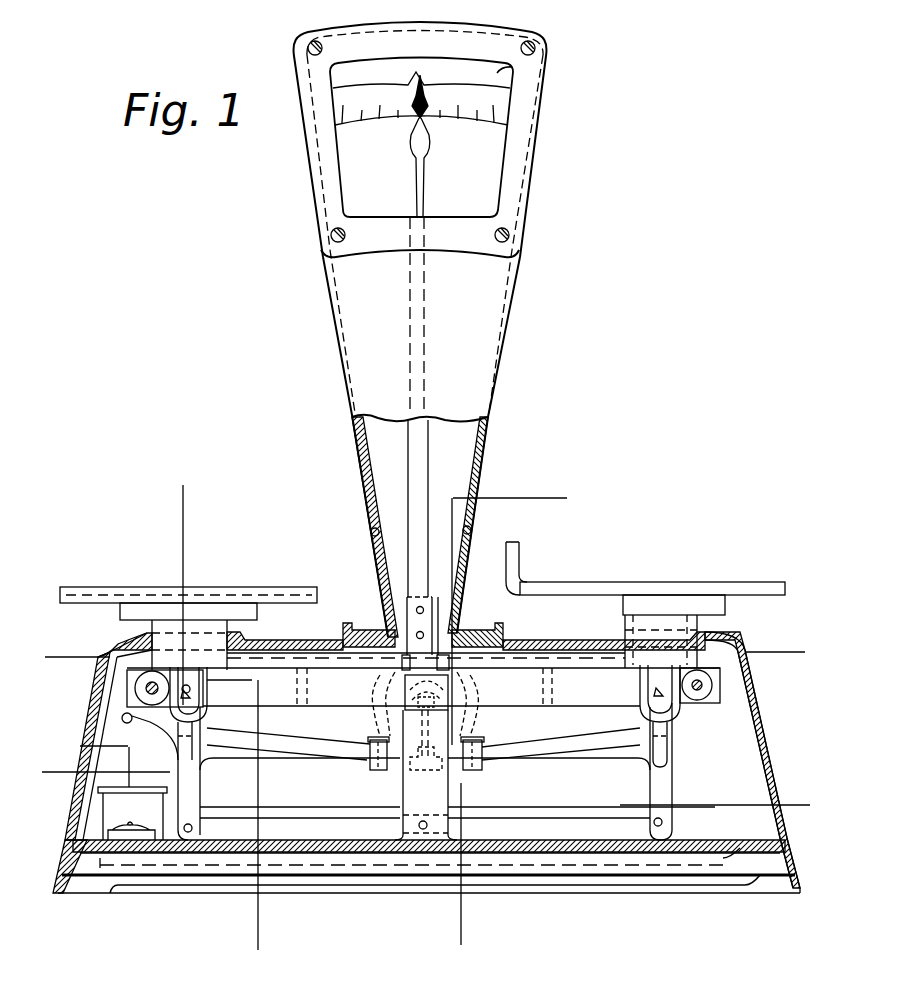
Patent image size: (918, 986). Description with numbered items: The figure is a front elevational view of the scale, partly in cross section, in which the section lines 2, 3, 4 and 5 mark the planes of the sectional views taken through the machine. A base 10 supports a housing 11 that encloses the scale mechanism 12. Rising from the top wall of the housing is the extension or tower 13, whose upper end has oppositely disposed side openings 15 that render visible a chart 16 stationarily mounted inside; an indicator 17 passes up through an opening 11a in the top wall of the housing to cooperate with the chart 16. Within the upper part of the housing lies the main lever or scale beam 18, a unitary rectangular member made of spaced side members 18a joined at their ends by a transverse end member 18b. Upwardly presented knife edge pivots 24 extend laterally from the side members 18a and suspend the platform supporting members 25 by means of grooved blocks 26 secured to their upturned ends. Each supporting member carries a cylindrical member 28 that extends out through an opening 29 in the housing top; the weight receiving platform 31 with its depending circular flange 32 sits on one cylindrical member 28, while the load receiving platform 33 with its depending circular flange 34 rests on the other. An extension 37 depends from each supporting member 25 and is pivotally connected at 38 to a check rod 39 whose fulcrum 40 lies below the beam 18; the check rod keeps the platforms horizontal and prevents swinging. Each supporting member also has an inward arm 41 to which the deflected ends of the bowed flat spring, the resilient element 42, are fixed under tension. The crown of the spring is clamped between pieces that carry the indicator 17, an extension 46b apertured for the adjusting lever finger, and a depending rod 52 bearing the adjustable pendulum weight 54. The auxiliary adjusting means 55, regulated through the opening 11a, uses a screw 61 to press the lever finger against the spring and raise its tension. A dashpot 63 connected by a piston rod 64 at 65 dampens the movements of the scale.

The section line 2- 2 is at (425, 657).
The section line 3- 3 is at (426, 787).
The section line 4- 4 is at (618, 505).
The section line 5- 5 is at (208, 462).
The base 10 is at (632, 852).
The housing 11 is at (768, 740).
The opening 11a is at (397, 633).
The scale mechanism 12 is at (545, 657).
The extension or tower 13 is at (487, 317).
The side openings 15 is at (478, 170).
The chart 16 is at (497, 73).
The indicator 17 is at (413, 462).
The main lever or scale beam 18 is at (423, 687).
The side members 18a is at (297, 690).
The transverse end member 18b is at (718, 693).
The knife edge pivots 24 is at (192, 693).
The platform supporting members 25 is at (215, 740).
The blocks 26 is at (117, 645).
The cylindrical member 28 is at (200, 630).
The opening 29 is at (182, 682).
The weight receiving platform 31 is at (70, 585).
The depending circular flange 32 is at (243, 612).
The load receiving platform 33 is at (752, 582).
The depending circular flange 34 is at (668, 600).
The extension 37 is at (188, 797).
The pivotal connection 38 is at (192, 837).
The check rod 39 is at (333, 827).
The fulcrum 40 is at (423, 830).
The arm or extension 41 is at (318, 770).
The resilient element 42 is at (372, 725).
The extension 46b is at (373, 718).
The rod 52 is at (423, 792).
The pendulum weight or counterbalance 54 is at (410, 770).
The auxiliary adjusting means 55 is at (380, 677).
The screw 61 is at (410, 653).
The dashpot 63 is at (132, 793).
The piston rod 64 is at (80, 746).
The connection point 65 is at (123, 717).